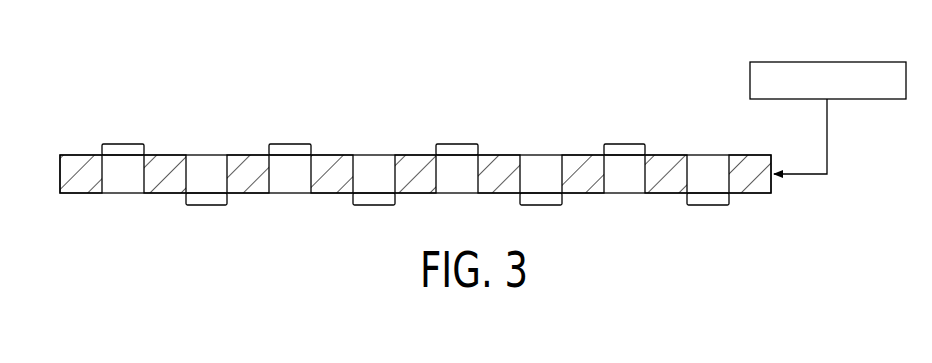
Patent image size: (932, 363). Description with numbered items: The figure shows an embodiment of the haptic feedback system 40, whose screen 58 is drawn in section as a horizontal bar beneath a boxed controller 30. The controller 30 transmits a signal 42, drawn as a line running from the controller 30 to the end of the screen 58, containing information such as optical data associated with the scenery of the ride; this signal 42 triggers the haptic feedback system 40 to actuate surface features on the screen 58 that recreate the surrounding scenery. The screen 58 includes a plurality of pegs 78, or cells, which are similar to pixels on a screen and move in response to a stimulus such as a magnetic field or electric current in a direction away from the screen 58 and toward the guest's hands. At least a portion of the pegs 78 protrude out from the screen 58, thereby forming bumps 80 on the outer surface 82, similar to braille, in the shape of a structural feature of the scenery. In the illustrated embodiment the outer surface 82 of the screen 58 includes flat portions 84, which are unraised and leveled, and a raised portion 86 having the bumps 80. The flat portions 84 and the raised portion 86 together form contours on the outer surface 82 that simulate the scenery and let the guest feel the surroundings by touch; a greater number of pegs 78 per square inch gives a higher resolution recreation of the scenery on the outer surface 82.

The controller 30 is at (790, 62).
The haptic feedback system 40 is at (402, 166).
The signal 42 is at (830, 135).
The screen 58 is at (80, 154).
The pegs 78 is at (152, 151).
The bumps 80 is at (123, 143).
The outer surface 82 is at (248, 154).
The flat portions 84 is at (332, 151).
The raised portion 86 is at (457, 141).